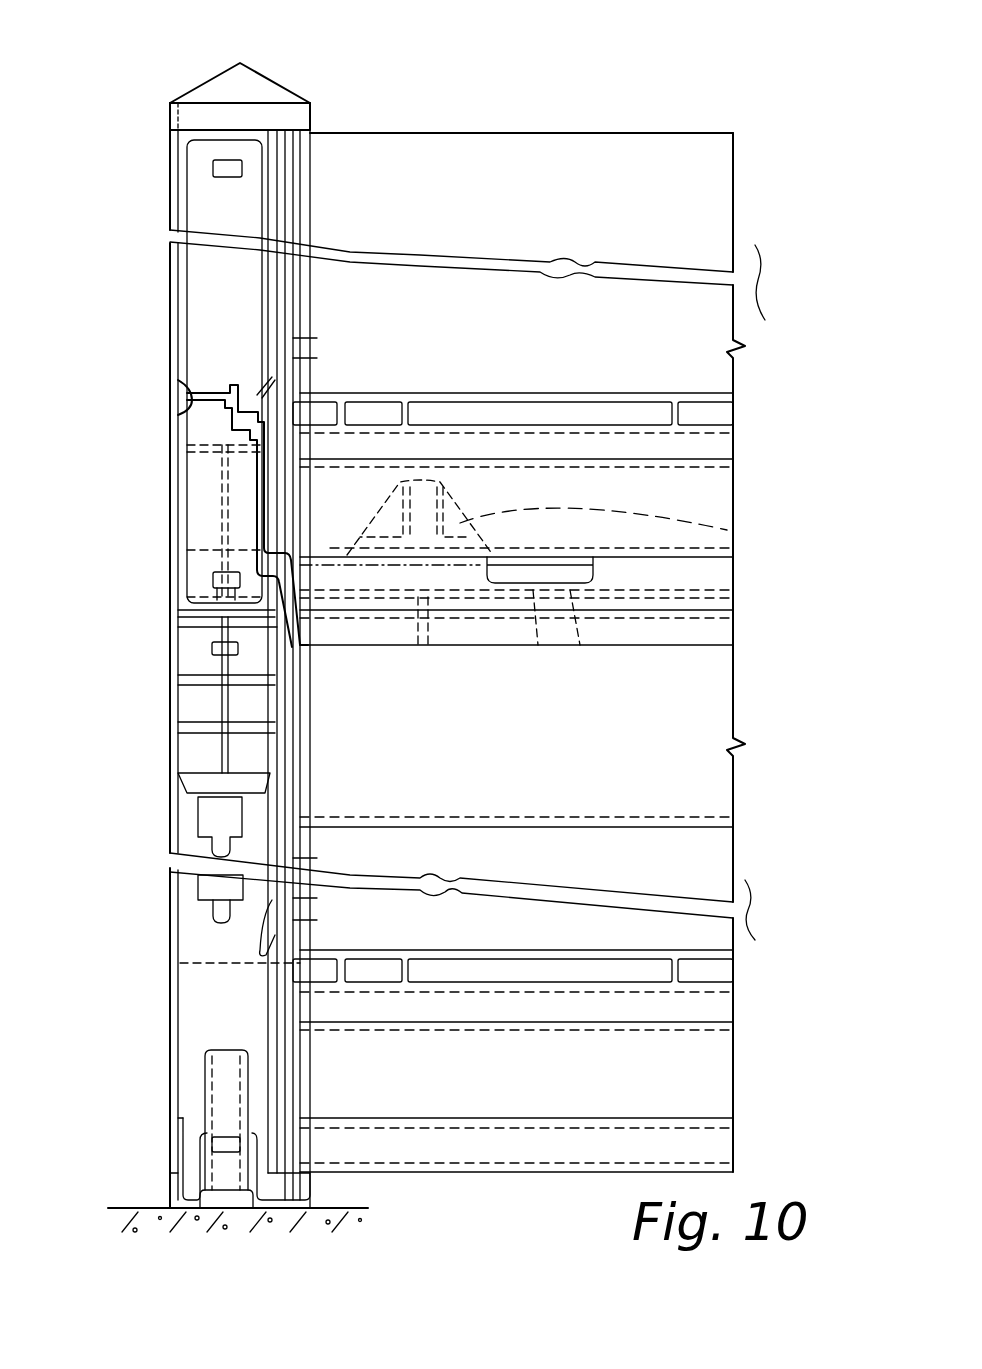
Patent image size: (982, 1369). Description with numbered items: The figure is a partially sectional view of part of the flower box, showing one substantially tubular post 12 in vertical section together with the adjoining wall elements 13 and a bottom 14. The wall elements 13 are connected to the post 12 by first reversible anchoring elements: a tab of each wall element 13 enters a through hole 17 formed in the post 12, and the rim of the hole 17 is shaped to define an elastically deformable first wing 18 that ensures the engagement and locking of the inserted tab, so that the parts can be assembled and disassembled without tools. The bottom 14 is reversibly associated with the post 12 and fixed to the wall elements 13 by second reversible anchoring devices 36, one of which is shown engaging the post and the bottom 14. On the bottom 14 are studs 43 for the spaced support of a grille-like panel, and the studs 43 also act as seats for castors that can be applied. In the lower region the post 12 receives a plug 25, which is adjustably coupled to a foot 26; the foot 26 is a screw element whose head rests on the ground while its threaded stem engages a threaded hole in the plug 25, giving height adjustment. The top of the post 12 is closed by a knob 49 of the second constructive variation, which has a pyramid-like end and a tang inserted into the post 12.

The post 12 is at (163, 403).
The wall element 13 is at (159, 282).
The bottom 14 is at (673, 452).
The through hole 17 is at (200, 903).
The first wing 18 is at (190, 890).
The plug 25 is at (178, 1200).
The foot 26 is at (228, 1200).
The second reversible anchoring device 36 is at (195, 421).
The stud 43 is at (703, 530).
The knob 49 is at (208, 72).